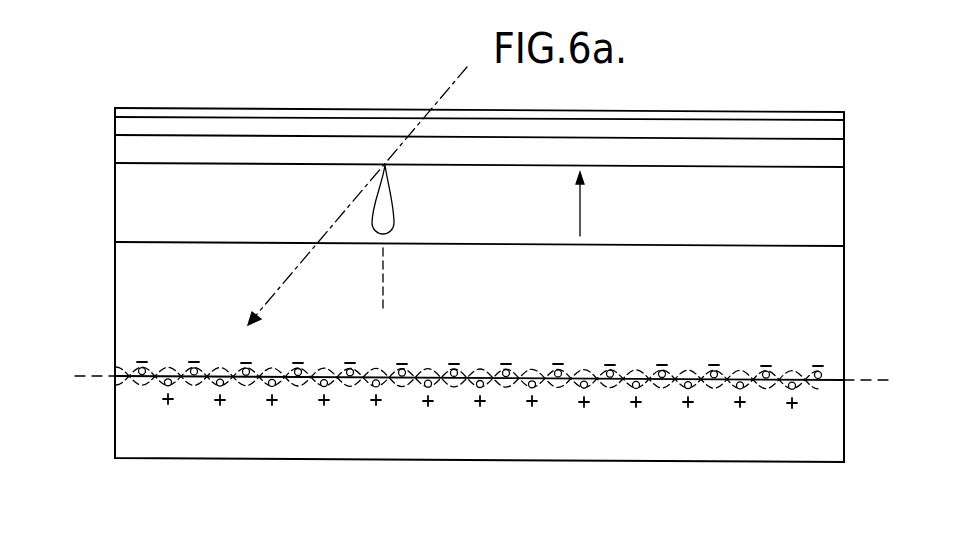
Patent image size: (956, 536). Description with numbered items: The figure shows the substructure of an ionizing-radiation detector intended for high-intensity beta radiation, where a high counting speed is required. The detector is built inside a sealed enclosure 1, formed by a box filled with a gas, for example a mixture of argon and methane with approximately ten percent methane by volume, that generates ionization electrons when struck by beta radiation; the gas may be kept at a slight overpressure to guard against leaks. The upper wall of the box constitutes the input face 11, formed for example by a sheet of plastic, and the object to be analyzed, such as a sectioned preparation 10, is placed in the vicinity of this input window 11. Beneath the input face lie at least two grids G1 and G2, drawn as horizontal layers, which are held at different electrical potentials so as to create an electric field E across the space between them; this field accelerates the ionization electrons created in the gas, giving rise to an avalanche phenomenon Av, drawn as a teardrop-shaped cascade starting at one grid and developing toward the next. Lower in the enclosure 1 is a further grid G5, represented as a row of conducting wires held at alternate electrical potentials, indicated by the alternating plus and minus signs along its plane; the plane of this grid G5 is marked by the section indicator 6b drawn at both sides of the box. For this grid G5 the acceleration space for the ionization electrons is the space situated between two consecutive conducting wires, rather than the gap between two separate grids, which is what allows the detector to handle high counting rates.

The sealed enclosure 1 is at (113, 267).
The sectioned preparation 10 is at (665, 117).
The input face 11 is at (726, 166).
The first grid G1 is at (240, 163).
The second grid G2 is at (290, 243).
The grid with alternately polarized conducting wires G5 is at (828, 381).
The boundary plane 6b is at (100, 377).
The avalanche phenomenon Av is at (390, 212).
The electric field E is at (587, 204).